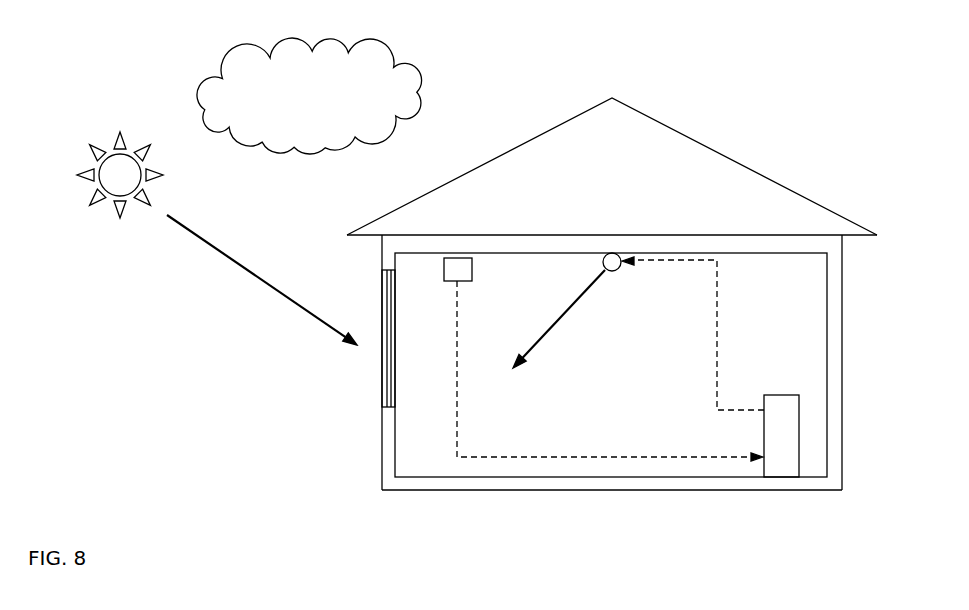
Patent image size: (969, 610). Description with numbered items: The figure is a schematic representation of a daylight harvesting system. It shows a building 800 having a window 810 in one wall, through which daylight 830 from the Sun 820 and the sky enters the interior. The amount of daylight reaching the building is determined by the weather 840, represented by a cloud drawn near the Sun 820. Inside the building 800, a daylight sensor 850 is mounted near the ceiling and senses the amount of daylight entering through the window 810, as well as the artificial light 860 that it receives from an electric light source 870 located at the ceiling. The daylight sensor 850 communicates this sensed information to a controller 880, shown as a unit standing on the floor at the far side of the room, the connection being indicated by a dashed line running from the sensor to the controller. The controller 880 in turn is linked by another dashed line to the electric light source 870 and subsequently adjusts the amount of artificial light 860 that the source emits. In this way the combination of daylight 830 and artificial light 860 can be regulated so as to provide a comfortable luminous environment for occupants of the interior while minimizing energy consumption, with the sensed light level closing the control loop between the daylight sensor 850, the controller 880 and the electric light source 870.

The building 800 is at (743, 185).
The window 810 is at (385, 373).
The Sun 820 is at (102, 218).
The daylight 830 is at (302, 315).
The weather 840 is at (309, 96).
The daylight sensor 850 is at (477, 272).
The artificial light 860 is at (540, 348).
The electric light source 870 is at (612, 272).
The controller 880 is at (778, 392).